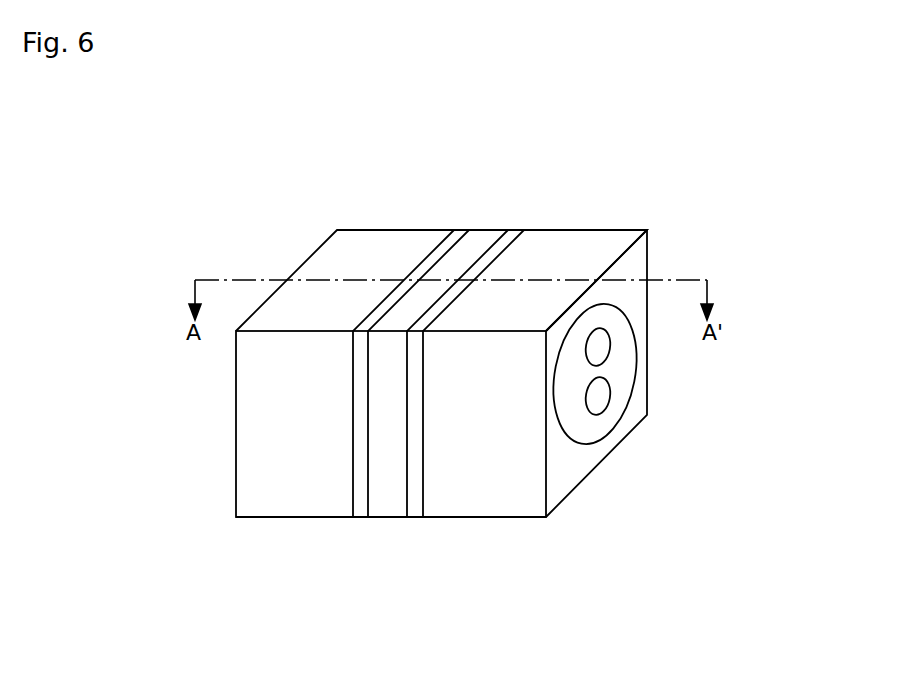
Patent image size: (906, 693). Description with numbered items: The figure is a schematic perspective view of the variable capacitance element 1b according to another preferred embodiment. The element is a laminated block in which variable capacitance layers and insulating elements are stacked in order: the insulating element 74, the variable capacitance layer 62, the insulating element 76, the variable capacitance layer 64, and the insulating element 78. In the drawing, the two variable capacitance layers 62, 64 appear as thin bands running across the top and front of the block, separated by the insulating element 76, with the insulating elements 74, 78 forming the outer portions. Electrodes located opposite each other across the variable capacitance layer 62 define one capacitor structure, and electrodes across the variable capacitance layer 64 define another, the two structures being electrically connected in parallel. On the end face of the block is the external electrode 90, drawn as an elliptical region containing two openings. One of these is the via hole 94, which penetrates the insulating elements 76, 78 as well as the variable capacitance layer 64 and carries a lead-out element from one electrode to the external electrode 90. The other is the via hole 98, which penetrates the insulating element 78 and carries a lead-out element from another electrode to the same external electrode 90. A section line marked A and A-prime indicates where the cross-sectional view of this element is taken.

The variable capacitance element 1b is at (247, 234).
The insulating element 74 is at (372, 238).
The variable capacitance layer 62 is at (456, 238).
The variable capacitance layer 64 is at (509, 238).
The insulating element 78 is at (606, 238).
The insulating element 76 is at (393, 503).
The external electrode 90 is at (583, 422).
The via hole 94 is at (602, 350).
The via hole 98 is at (603, 393).